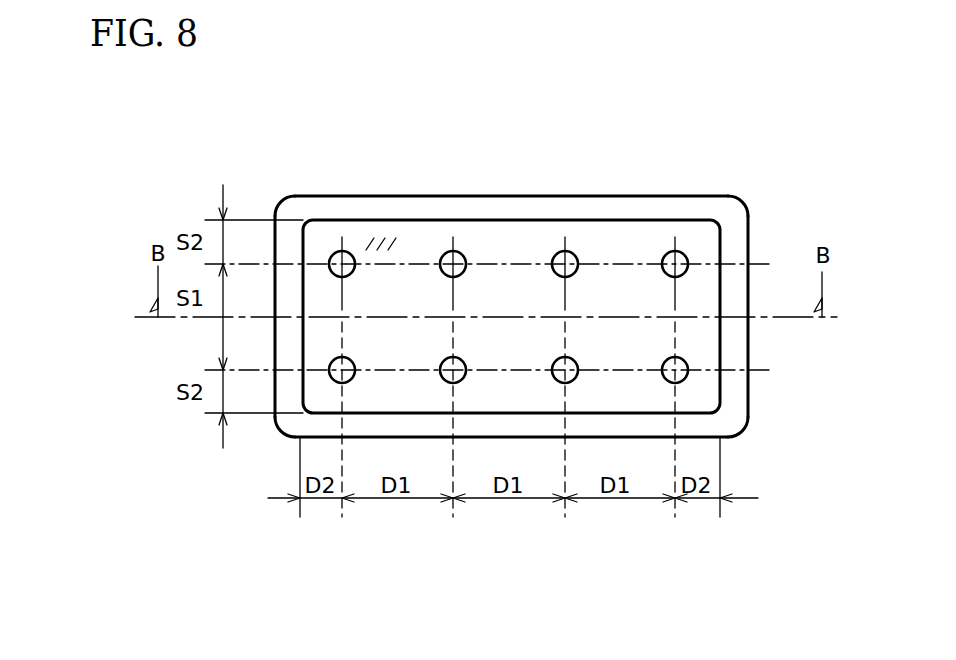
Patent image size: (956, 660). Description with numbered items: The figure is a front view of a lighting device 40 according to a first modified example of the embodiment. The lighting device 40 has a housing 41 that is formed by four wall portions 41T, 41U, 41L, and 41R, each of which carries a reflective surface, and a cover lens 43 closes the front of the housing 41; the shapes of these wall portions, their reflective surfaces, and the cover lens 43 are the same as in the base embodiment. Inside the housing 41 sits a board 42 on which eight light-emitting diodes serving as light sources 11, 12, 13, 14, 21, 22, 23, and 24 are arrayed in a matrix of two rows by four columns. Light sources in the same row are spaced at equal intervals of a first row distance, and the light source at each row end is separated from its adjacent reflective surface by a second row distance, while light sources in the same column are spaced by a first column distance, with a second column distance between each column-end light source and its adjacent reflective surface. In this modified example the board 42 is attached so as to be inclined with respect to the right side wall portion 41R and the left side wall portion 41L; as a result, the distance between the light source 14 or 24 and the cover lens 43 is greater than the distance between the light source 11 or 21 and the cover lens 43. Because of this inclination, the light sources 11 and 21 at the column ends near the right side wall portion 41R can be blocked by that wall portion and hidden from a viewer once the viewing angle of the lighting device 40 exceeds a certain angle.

The lighting device 40 is at (413, 125).
The housing 41 is at (726, 196).
The wall portion 41T is at (512, 196).
The left side wall portion 41L is at (733, 345).
The right side wall portion 41R is at (275, 334).
The wall portion 41U is at (540, 427).
The board 42 is at (614, 248).
The cover lens 43 is at (372, 238).
The light source 11 is at (351, 272).
The light source 12 is at (463, 272).
The light source 13 is at (553, 258).
The light source 14 is at (664, 273).
The light source 21 is at (355, 363).
The light source 22 is at (465, 380).
The light source 23 is at (552, 365).
The light source 24 is at (664, 362).